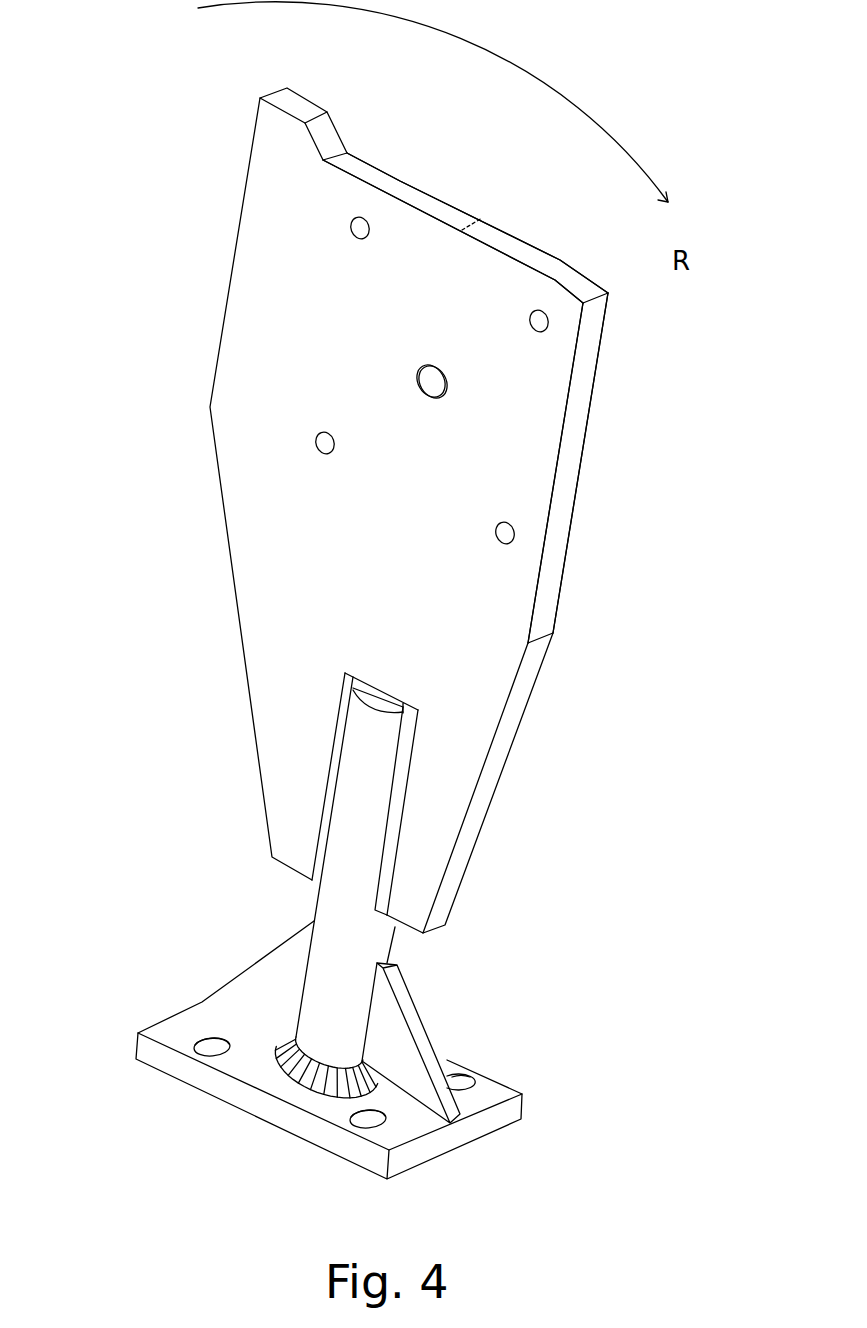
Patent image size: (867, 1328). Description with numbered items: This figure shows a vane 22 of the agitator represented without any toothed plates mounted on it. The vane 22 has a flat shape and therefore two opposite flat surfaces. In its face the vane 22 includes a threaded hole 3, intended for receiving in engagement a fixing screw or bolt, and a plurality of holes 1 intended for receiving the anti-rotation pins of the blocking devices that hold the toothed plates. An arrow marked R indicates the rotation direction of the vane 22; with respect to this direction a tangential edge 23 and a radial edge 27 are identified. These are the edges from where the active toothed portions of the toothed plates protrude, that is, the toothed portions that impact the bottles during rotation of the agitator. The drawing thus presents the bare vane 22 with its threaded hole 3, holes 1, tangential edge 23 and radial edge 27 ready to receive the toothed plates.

The vane 22 is at (192, 523).
The tangential edge 23 is at (553, 273).
The radial edge 27 is at (567, 470).
The holes 1 is at (530, 321).
The threaded hole 3 is at (428, 375).